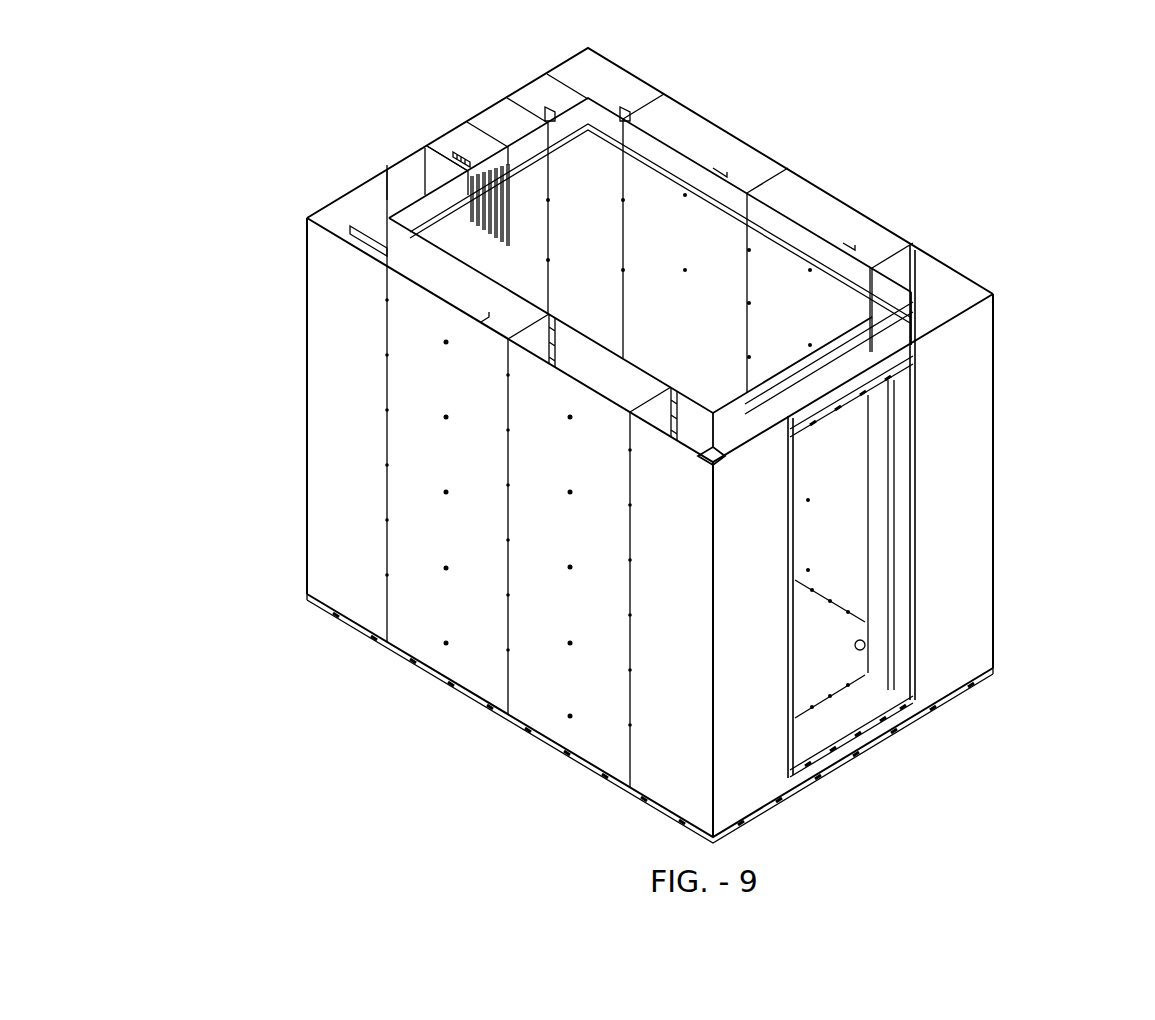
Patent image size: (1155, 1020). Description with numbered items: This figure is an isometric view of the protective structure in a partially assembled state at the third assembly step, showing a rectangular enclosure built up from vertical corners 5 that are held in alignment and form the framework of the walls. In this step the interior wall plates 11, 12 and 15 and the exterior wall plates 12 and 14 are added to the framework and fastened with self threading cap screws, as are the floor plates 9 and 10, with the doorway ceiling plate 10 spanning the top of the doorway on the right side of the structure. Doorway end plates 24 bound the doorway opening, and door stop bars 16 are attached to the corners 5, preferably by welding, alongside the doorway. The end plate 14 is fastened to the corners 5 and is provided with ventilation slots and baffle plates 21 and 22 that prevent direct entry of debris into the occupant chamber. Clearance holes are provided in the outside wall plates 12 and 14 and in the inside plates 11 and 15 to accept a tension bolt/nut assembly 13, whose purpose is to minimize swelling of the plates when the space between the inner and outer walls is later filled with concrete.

The corner 5 is at (556, 48).
The floor plate 9 is at (829, 672).
The doorway ceiling plate 10 is at (829, 357).
The interior wall plate 11 is at (647, 186).
The exterior wall plate 12 is at (784, 153).
The tension bolt/nut assembly 13 is at (436, 581).
The end plate 14 is at (401, 148).
The interior wall plate 15 is at (535, 207).
The door stop bar 16 is at (905, 577).
The baffle plate 21 is at (455, 142).
The baffle plate 22 is at (492, 124).
The doorway end plate 24 is at (845, 372).